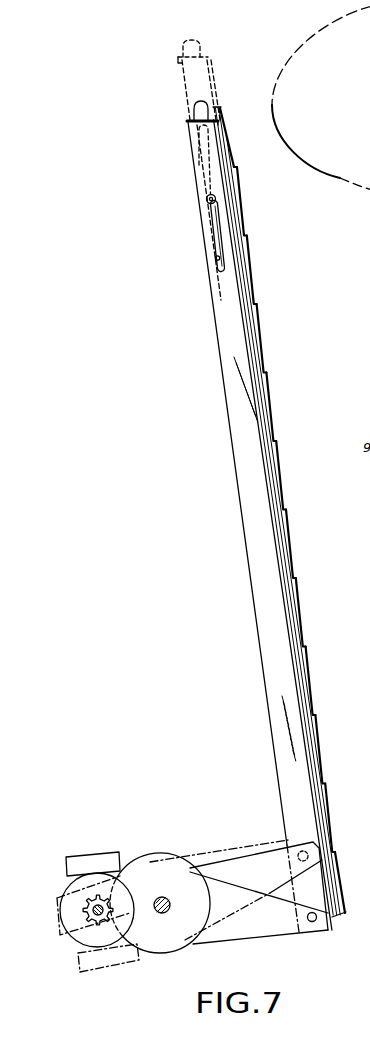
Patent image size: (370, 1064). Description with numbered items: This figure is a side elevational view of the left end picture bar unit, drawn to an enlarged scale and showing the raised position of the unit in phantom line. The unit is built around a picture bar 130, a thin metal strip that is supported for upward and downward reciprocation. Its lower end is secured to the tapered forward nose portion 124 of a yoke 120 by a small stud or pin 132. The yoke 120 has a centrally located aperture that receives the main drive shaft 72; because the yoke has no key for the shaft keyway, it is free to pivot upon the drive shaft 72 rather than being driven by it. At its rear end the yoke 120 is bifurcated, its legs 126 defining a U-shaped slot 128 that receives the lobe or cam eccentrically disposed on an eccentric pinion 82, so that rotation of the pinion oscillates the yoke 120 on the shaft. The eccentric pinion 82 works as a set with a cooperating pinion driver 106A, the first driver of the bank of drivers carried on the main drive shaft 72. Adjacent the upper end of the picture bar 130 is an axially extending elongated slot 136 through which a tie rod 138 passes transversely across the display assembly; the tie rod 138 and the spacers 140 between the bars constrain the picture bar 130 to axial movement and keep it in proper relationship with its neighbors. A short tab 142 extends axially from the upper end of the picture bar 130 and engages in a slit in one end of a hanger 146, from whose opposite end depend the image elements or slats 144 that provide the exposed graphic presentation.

The picture bar 130 is at (243, 515).
The tab 142 is at (194, 111).
The hanger 146 is at (219, 108).
The slat 144 is at (263, 345).
The tie rod 138 is at (206, 200).
The spacer 140 is at (210, 222).
The elongated slot 136 is at (215, 259).
The yoke 120 is at (246, 944).
The forward nose portion 124 is at (283, 936).
The pin 132 is at (313, 922).
The pinion driver 106A is at (157, 955).
The main drive shaft 72 is at (167, 899).
The eccentric pinion 82 is at (73, 944).
The leg 126 is at (97, 863).
The U-shaped slot 128 is at (68, 883).